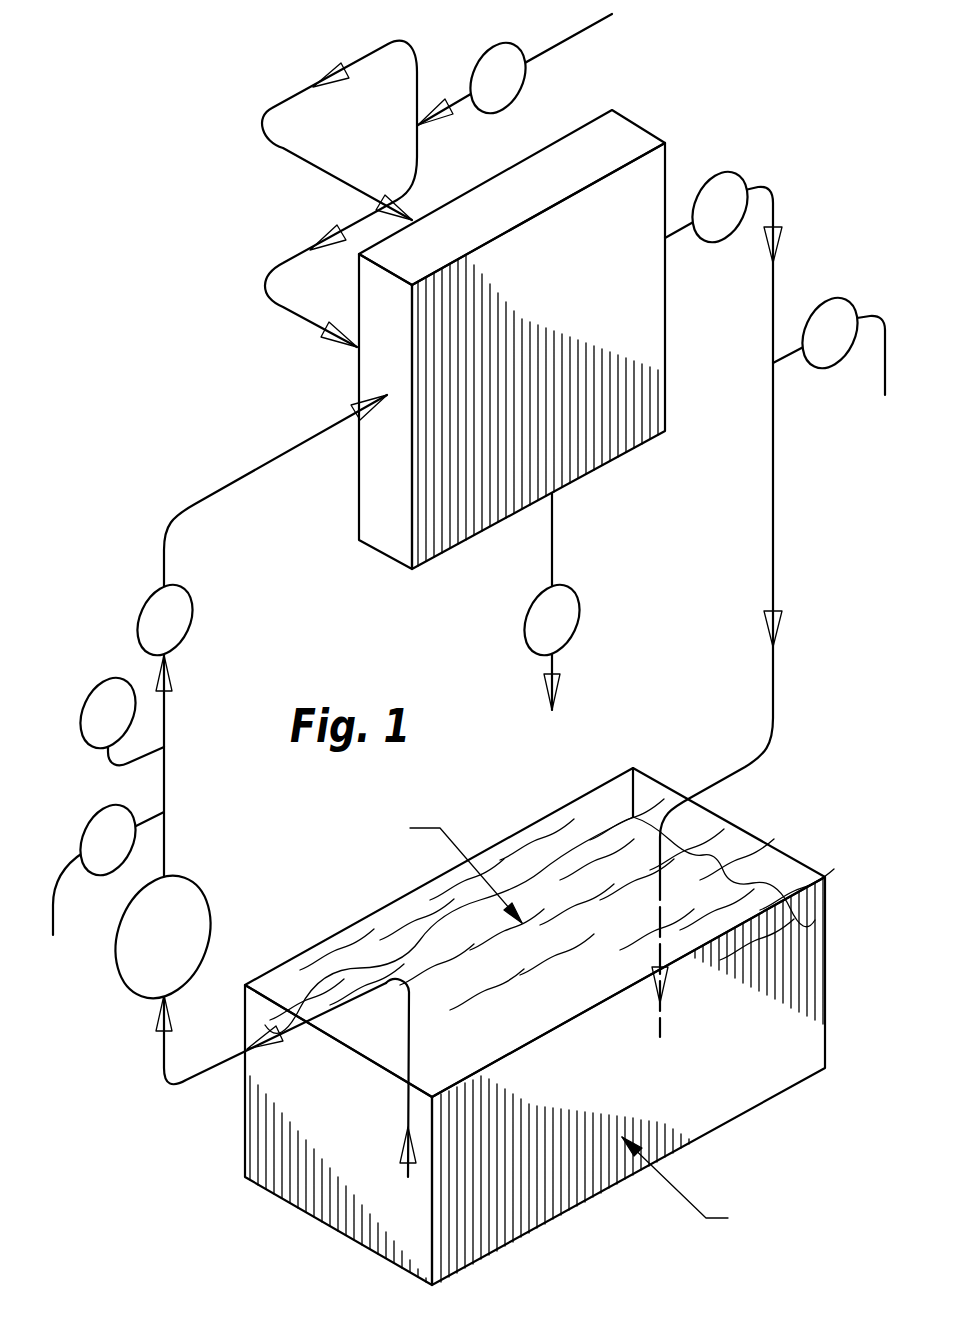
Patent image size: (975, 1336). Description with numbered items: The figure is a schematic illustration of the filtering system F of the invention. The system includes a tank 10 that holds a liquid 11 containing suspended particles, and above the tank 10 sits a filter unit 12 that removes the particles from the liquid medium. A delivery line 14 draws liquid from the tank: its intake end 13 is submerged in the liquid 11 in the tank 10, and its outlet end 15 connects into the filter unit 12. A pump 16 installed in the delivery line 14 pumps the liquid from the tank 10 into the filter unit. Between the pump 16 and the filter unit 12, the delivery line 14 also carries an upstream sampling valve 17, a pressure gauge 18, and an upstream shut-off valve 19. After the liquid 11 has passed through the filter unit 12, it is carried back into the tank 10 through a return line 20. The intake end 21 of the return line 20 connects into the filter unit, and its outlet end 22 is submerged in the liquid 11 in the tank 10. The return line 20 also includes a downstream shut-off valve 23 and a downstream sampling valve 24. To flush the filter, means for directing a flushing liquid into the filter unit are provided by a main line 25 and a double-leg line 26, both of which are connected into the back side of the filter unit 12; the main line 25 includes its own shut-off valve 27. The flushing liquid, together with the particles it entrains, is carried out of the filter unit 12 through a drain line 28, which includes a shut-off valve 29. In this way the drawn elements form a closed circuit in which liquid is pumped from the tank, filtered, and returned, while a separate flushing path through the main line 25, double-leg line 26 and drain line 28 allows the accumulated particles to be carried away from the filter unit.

The tank 10 is at (737, 823).
The liquid 11 is at (440, 937).
The filter unit 12 is at (612, 430).
The intake end 13 is at (403, 1157).
The delivery line 14 is at (163, 1070).
The outlet end 15 is at (337, 427).
The pump 16 is at (200, 877).
The upstream sampling valve 17 is at (118, 803).
The pressure gauge 18 is at (120, 678).
The upstream shut-off valve 19 is at (195, 610).
The return line 20 is at (773, 537).
The intake end 21 is at (678, 227).
The outlet end 22 is at (660, 1020).
The downstream shut-off valve 23 is at (727, 240).
The downstream sampling valve 24 is at (826, 367).
The main line 25 is at (573, 35).
The double-leg line 26 is at (297, 253).
The shut-off valve 27 is at (497, 113).
The drain line 28 is at (552, 558).
The shut-off valve 29 is at (575, 627).
The filtering system F is at (292, 352).